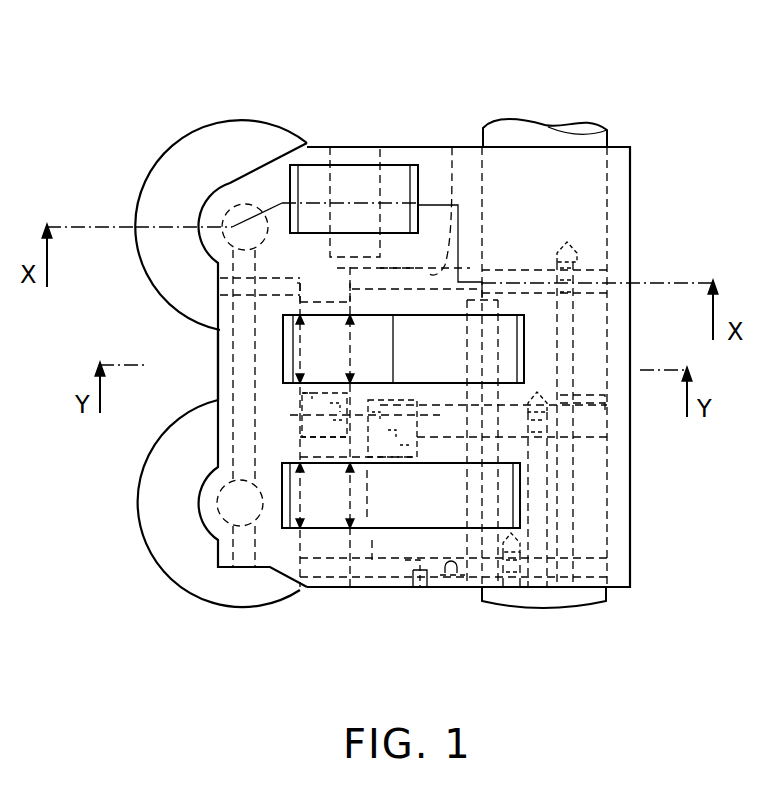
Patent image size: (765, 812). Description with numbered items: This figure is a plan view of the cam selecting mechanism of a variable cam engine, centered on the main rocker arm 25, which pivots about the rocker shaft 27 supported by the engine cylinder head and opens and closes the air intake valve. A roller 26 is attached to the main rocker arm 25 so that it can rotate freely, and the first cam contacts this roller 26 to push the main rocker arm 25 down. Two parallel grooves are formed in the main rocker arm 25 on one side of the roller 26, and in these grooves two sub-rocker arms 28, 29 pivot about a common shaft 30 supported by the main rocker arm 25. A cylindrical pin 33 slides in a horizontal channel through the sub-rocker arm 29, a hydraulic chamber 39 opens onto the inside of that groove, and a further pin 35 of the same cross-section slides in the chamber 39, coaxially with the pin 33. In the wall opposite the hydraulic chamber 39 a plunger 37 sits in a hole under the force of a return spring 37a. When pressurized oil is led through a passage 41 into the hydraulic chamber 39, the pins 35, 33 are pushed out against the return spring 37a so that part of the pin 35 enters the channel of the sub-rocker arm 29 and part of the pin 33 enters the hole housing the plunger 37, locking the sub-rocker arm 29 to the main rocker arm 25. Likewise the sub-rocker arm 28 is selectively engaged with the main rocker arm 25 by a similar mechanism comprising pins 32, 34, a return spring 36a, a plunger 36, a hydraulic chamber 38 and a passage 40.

The main rocker arm 25 is at (402, 147).
The roller 26 is at (316, 185).
The rocker shaft 27 is at (573, 126).
The sub-rocker arm 28 is at (455, 492).
The sub-rocker arm 29 is at (455, 332).
The common shaft 30 is at (603, 403).
The pin 32 is at (362, 522).
The cylindrical pin 33 is at (220, 350).
The pin 34 is at (373, 540).
The pin 35 is at (225, 250).
The plunger 36 is at (300, 450).
The return spring 36a is at (405, 447).
The plunger 37 is at (220, 383).
The return spring 37a is at (303, 420).
The hydraulic chamber 38 is at (407, 588).
The hydraulic chamber 39 is at (220, 320).
The passage 40 is at (453, 590).
The passage 41 is at (454, 146).